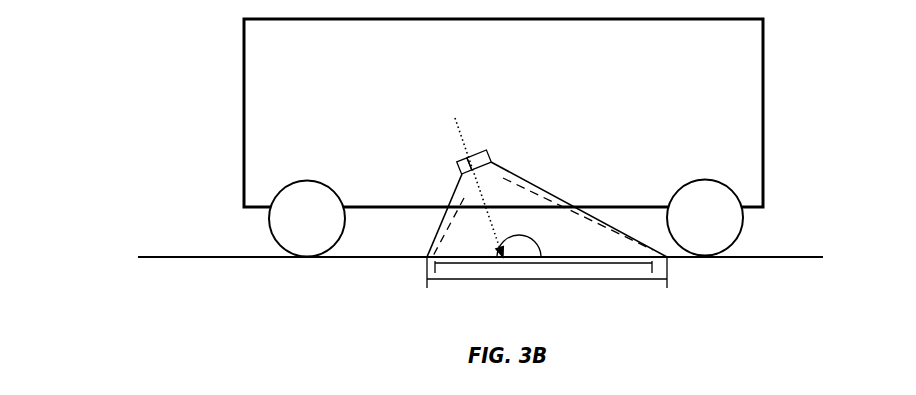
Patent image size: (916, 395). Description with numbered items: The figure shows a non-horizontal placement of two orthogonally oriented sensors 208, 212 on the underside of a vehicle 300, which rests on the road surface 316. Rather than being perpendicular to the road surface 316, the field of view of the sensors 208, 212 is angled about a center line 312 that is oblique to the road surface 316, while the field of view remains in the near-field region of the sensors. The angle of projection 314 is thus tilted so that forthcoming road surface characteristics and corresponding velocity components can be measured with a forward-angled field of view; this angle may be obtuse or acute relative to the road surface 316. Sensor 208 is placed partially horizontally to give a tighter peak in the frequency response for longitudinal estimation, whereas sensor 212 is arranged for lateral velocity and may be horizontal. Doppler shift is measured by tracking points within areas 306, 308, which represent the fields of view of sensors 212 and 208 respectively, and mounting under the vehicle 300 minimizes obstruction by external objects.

The vehicle 300 is at (764, 78).
The road surface 316 is at (823, 257).
The sensor 212 is at (455, 168).
The sensor 208 is at (492, 160).
The center line 312 is at (455, 118).
The angle of projection 314 is at (521, 232).
The area 308 is at (543, 279).
The area 306 is at (517, 263).